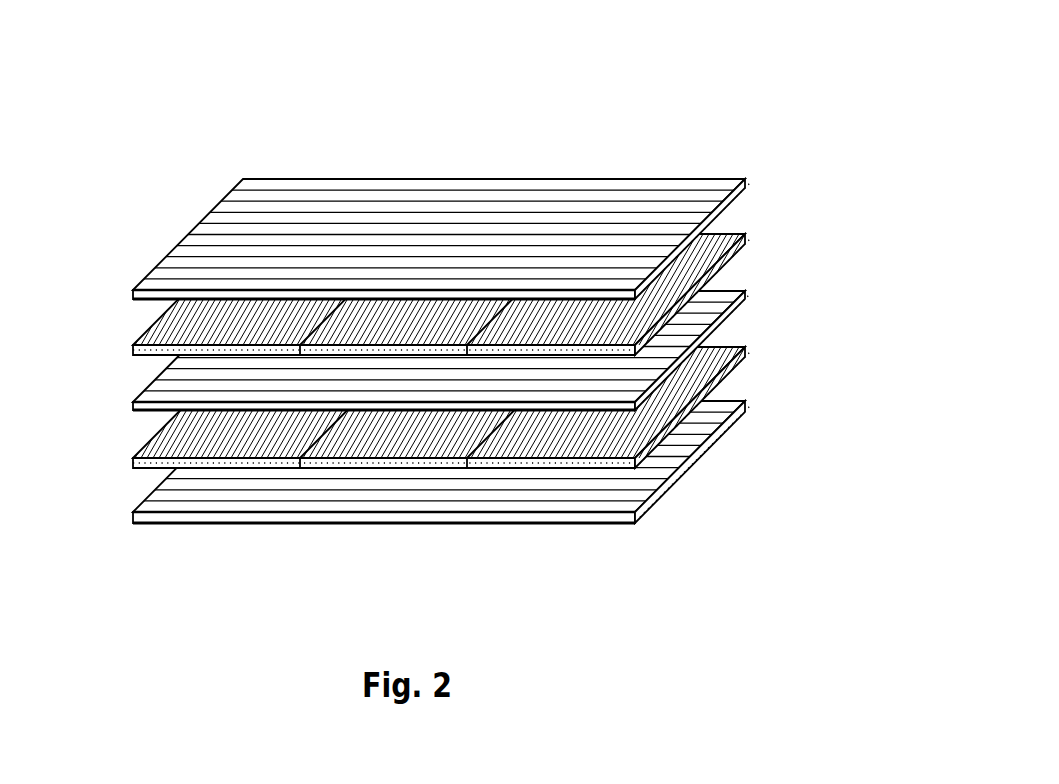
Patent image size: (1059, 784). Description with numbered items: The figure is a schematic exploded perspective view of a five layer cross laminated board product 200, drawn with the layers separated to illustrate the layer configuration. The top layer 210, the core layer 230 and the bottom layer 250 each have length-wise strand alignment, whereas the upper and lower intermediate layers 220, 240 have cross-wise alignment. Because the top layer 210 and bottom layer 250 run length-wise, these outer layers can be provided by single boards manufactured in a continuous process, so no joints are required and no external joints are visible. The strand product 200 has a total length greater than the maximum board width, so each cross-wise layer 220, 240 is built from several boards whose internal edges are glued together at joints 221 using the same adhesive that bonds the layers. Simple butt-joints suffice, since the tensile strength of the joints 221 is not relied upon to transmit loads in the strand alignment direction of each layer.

The cross laminated board product 200 is at (317, 101).
The top layer 210 is at (687, 202).
The upper intermediate layer 220 is at (183, 326).
The joints 221 is at (320, 323).
The core layer 230 is at (710, 303).
The lower intermediate layer 240 is at (193, 441).
The bottom layer 250 is at (635, 493).